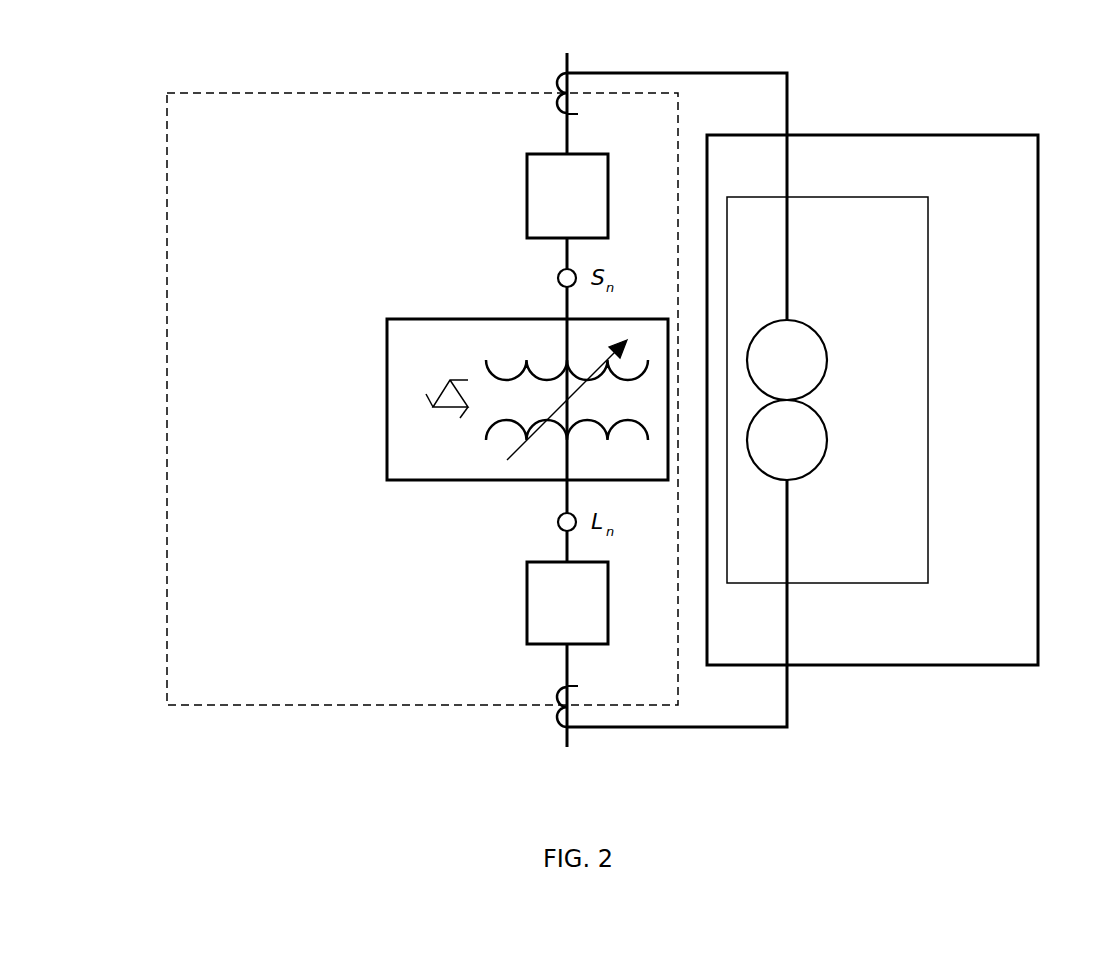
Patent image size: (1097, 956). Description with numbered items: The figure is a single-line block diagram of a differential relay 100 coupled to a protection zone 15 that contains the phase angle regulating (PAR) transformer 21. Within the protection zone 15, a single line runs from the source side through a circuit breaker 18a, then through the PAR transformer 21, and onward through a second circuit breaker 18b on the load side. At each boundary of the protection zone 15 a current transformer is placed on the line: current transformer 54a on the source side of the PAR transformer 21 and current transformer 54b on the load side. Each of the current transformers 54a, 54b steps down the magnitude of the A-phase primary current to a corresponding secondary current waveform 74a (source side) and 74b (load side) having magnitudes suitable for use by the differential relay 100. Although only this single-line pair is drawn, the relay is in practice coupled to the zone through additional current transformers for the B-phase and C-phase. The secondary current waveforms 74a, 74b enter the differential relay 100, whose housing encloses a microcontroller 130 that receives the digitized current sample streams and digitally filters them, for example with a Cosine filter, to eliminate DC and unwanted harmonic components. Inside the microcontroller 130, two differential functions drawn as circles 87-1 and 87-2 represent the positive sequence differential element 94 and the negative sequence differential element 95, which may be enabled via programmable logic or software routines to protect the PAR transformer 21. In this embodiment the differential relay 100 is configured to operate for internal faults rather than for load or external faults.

The protection zone 15 is at (369, 399).
The circuit breaker 18a is at (506, 196).
The circuit breaker 18b is at (506, 603).
The PAR transformer 21 is at (504, 382).
The current transformer 54a is at (506, 76).
The current transformer 54b is at (511, 718).
The secondary current waveform 74a is at (694, 179).
The secondary current waveform 74b is at (694, 620).
The first protective relay 87-1 is at (787, 360).
The second protective relay 87-2 is at (787, 440).
The positive sequence differential element 94 is at (821, 343).
The negative sequence differential element 95 is at (821, 457).
The differential relay 100 is at (879, 383).
The microcontroller 130 is at (827, 390).